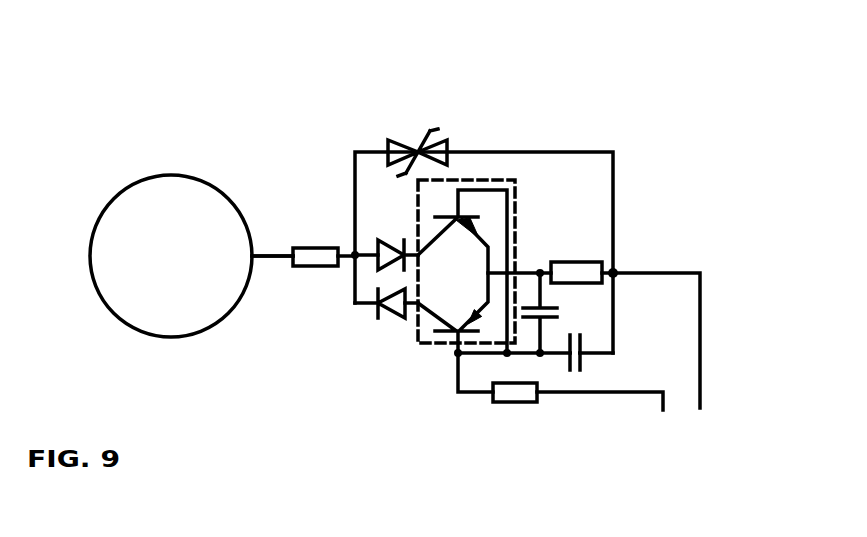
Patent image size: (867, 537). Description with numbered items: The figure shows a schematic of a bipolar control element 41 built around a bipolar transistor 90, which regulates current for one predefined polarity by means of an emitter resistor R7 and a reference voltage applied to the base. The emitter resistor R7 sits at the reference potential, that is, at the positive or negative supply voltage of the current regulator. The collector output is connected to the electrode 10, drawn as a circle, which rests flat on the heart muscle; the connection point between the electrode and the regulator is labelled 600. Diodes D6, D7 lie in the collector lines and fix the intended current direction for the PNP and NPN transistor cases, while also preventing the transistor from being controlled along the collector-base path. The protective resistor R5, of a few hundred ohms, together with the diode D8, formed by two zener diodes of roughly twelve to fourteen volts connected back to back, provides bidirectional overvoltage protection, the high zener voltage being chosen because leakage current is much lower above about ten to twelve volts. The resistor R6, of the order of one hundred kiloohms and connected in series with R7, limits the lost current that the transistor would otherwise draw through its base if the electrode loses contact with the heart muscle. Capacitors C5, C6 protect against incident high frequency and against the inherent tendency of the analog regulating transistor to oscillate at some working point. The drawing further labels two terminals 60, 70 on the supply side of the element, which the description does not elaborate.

The electrode 10 is at (142, 205).
The signal input node 600 is at (270, 256).
The protective resistor R5 is at (310, 267).
The diode D7 is at (383, 244).
The diode D6 is at (395, 322).
The bidirectional overvoltage protection diode D8 is at (388, 135).
The bipolar control element 41 is at (768, 90).
The bipolar transistor 90 is at (443, 343).
The emitter resistor R7 is at (580, 270).
The capacitor C6 is at (557, 302).
The capacitor C5 is at (582, 372).
The resistor R6 is at (510, 402).
The output terminal 60 is at (663, 410).
The supply terminal 70 is at (700, 408).